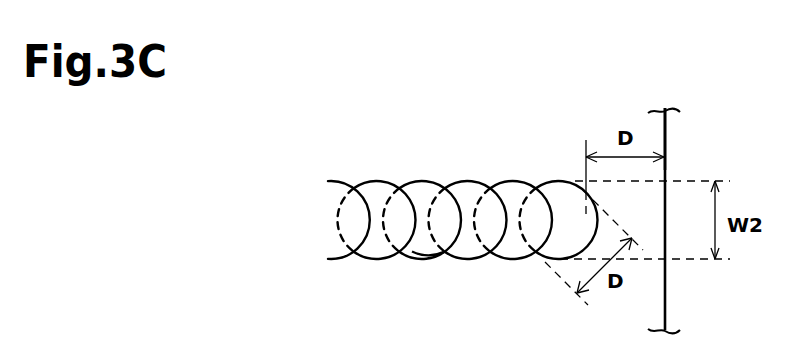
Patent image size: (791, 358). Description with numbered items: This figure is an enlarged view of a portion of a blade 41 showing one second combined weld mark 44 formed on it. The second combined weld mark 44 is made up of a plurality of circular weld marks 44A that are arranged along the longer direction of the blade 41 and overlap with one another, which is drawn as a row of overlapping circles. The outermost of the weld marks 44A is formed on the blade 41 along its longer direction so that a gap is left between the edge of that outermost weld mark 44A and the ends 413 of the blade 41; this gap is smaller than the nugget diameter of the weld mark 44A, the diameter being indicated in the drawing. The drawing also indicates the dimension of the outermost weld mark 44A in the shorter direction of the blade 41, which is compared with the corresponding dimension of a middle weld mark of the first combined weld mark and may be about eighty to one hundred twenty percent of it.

The second combined weld mark 44 is at (499, 134).
The circular weld marks 44A is at (458, 252).
The blade 41 is at (665, 298).
The ends of the blade 413 is at (667, 135).